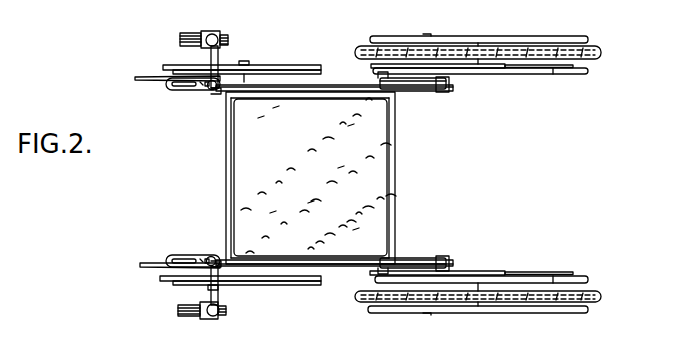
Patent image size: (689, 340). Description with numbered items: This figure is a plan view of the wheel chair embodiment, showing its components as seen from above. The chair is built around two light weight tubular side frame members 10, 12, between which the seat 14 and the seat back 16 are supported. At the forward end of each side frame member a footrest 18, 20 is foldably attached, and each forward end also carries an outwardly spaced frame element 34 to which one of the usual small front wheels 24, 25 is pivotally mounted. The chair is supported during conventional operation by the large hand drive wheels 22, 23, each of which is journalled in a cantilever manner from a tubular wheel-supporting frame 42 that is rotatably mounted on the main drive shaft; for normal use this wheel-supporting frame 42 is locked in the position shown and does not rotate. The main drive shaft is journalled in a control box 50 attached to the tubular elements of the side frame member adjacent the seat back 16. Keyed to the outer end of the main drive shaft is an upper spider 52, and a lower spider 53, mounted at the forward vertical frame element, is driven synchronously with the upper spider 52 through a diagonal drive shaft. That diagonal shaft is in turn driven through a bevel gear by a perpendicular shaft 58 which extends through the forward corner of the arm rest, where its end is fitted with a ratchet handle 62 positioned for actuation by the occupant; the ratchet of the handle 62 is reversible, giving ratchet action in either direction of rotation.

The tubular side frame member 10 is at (300, 84).
The tubular side frame member 12 is at (287, 250).
The seat 14 is at (308, 171).
The seat back 16 is at (390, 162).
The footrest 18 is at (130, 72).
The footrest 20 is at (135, 256).
The hand drive wheel 22 is at (605, 45).
The hand drive wheel 23 is at (605, 284).
The small front wheel 24 is at (174, 26).
The small front wheel 25 is at (182, 308).
The outwardly spaced frame element 34 is at (211, 52).
The tubular wheel-supporting frame 42 is at (581, 65).
The control box 50 is at (410, 84).
The upper spider 52 is at (364, 58).
The lower spider 53 is at (157, 58).
The shaft 58 is at (203, 82).
The ratchet handle 62 is at (168, 83).